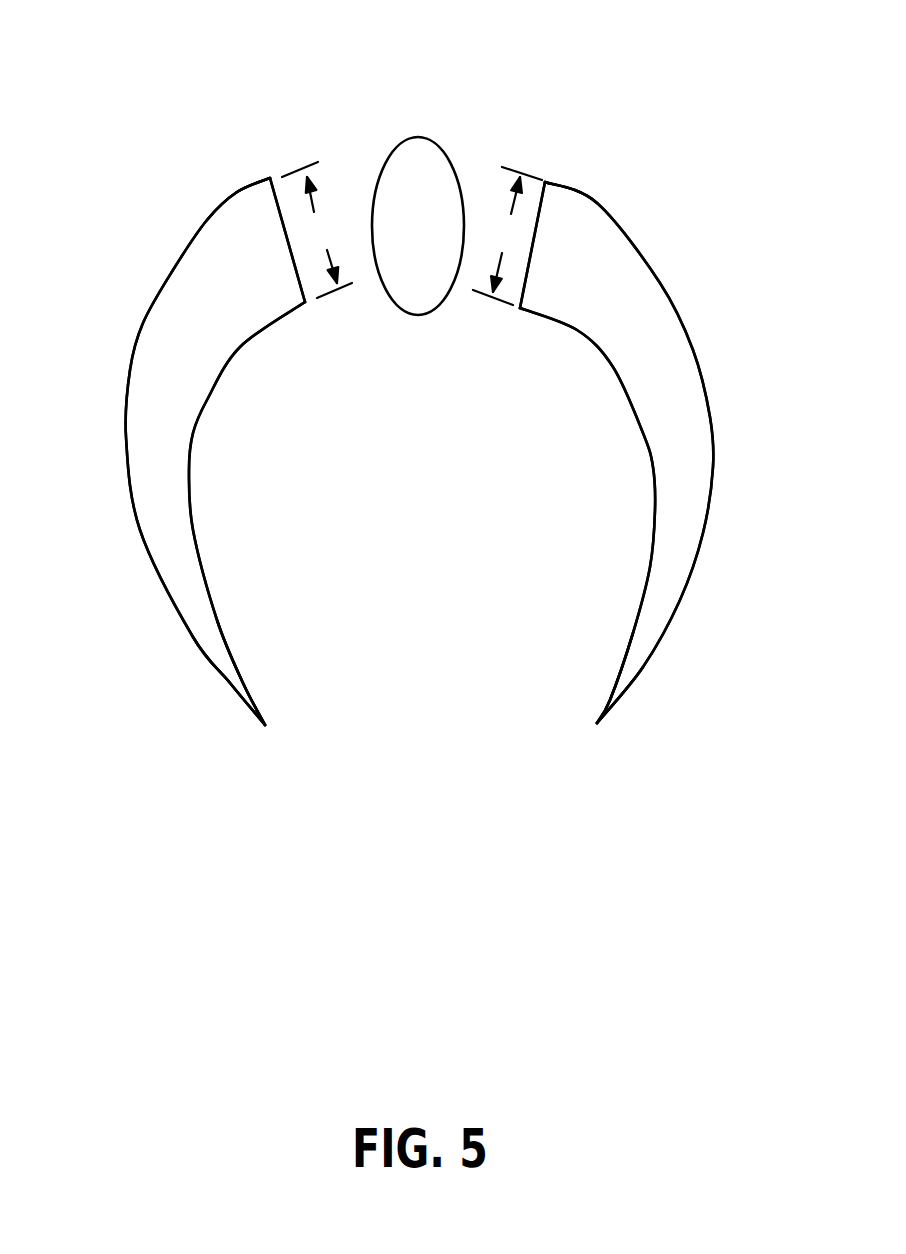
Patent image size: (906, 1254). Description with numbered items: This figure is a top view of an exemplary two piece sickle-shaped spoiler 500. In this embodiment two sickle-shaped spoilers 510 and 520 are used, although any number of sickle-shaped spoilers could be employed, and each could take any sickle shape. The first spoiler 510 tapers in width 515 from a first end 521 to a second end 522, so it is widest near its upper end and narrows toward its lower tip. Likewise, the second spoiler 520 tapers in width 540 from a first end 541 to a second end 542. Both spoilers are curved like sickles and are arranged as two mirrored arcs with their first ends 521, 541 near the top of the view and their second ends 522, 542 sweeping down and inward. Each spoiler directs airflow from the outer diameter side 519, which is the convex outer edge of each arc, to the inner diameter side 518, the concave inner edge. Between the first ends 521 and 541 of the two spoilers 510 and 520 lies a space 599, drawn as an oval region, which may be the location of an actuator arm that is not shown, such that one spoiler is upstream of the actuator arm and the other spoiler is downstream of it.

The two piece sickle-shaped spoiler 500 is at (222, 28).
The sickle-shaped spoiler 510 is at (150, 528).
The sickle-shaped spoiler 520 is at (690, 405).
The outer diameter side 519 is at (143, 327).
The inner diameter side 518 is at (190, 438).
The first end 521 is at (250, 227).
The first end 541 is at (568, 227).
The second end 522 is at (207, 637).
The second end 542 is at (642, 640).
The width 515 is at (317, 230).
The width 540 is at (507, 236).
The space 599 is at (422, 158).